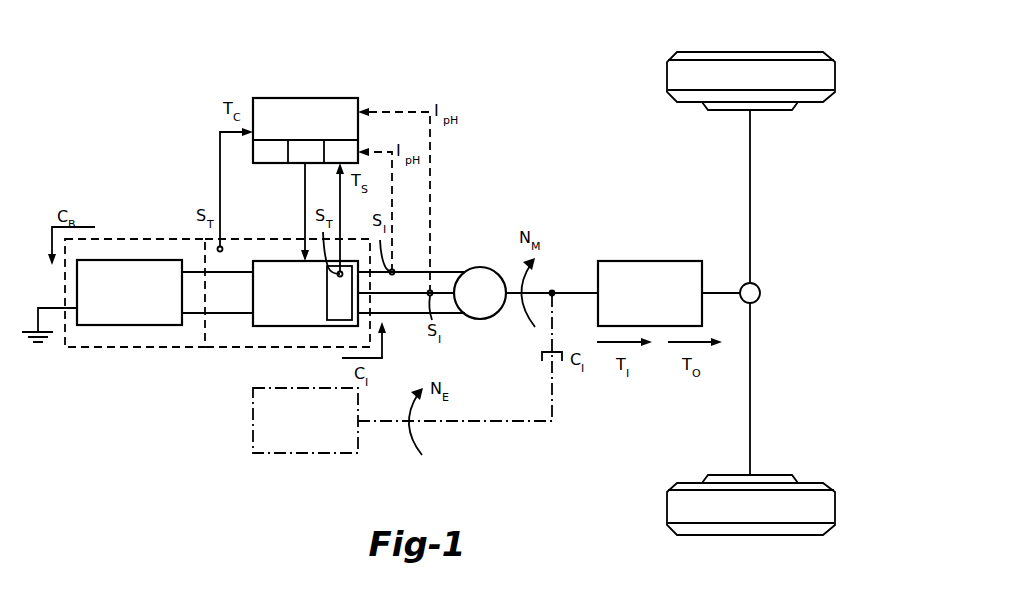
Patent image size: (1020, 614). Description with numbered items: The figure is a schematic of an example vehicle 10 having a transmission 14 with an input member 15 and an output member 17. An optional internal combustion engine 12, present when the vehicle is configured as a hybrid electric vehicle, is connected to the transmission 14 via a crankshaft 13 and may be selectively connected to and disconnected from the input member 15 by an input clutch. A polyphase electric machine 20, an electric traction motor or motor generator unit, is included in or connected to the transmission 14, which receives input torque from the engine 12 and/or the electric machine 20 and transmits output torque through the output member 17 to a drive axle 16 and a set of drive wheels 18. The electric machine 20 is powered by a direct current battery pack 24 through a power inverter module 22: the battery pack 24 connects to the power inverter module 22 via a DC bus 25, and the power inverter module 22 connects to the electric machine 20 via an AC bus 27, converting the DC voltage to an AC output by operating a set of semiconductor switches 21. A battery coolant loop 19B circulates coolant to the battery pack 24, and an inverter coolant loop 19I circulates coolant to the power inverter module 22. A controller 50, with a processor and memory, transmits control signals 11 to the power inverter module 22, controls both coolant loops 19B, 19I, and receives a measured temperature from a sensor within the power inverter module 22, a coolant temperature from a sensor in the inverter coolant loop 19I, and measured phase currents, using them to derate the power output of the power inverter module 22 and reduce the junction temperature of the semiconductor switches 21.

The vehicle 10 is at (108, 73).
The controller 50 is at (305, 98).
The control signals 11 is at (305, 186).
The battery pack 24 is at (128, 260).
The DC bus 25 is at (237, 272).
The power inverter module 22 is at (277, 261).
The semiconductor switches 21 is at (339, 293).
The battery coolant loop 19B is at (138, 347).
The inverter coolant loop 19I is at (222, 347).
The AC bus 27 is at (405, 313).
The internal combustion engine 12 is at (305, 453).
The crankshaft 13 is at (505, 421).
The polyphase electric machine 20 is at (480, 267).
The input member 15 is at (583, 293).
The transmission 14 is at (650, 261).
The output member 17 is at (725, 293).
The drive axle 16 is at (751, 172).
The drive wheels 18 is at (803, 52).